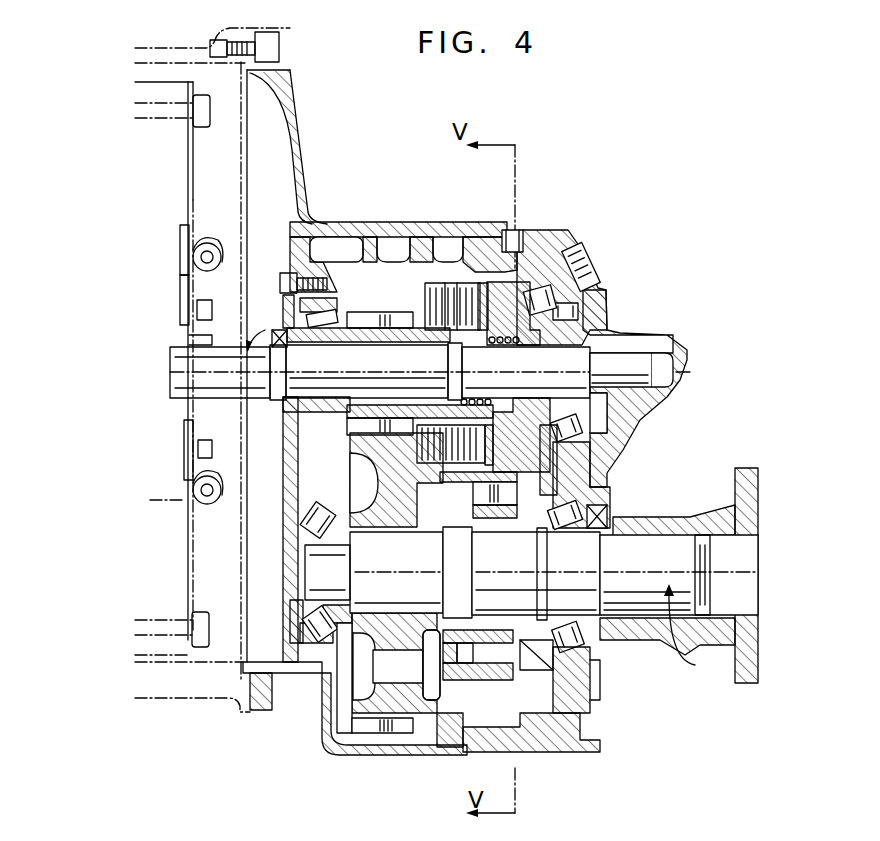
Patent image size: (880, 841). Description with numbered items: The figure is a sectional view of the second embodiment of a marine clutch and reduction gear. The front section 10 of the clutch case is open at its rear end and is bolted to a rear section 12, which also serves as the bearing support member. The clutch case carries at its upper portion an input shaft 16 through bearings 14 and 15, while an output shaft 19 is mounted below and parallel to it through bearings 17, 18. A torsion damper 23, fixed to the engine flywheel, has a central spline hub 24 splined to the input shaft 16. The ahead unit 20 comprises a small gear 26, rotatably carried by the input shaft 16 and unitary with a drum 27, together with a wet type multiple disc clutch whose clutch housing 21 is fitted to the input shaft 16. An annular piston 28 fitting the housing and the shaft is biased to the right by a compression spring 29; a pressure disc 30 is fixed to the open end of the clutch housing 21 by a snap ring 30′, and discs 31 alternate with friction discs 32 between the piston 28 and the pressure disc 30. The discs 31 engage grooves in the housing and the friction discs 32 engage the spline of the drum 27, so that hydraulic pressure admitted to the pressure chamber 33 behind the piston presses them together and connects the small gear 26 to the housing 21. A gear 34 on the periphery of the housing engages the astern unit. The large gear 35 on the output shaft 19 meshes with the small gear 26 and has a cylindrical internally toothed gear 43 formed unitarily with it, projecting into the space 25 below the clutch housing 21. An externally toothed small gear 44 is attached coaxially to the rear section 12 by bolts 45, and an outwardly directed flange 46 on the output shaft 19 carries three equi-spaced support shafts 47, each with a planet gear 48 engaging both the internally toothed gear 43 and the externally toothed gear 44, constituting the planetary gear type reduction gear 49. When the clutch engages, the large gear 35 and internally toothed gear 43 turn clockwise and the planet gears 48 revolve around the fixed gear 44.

The front section of the clutch case 10 is at (322, 748).
The rear section of the clutch case 12 is at (532, 728).
The bearing 14 is at (337, 314).
The bearing 15 is at (592, 315).
The input shaft 16 is at (257, 398).
The bearing 17 is at (315, 628).
The bearing 18 is at (575, 640).
The output shaft 19 is at (640, 553).
The ahead unit 20 is at (398, 270).
The clutch housing 21 is at (492, 280).
The torsion damper 23 is at (205, 242).
The central spline hub 24 is at (175, 338).
The space 25 is at (450, 740).
The small gear 26 is at (365, 330).
The drum 27 is at (436, 342).
The annular piston 28 is at (535, 305).
The compression spring 29 is at (478, 346).
The pressure disc 30 is at (434, 285).
The snap ring 30′ is at (412, 288).
The discs 31 is at (454, 285).
The friction discs 32 is at (482, 298).
The pressure chamber 33 is at (583, 312).
The gear 34 is at (520, 292).
The large gear 35 is at (363, 730).
The internally toothed gear 43 is at (437, 690).
The externally toothed small gear 44 is at (520, 650).
The bolts 45 is at (538, 675).
The outwardly directed flange 46 is at (455, 557).
The support shafts 47 is at (453, 662).
The planet gear 48 is at (492, 632).
The planetary gear type reduction gear 49 is at (462, 698).